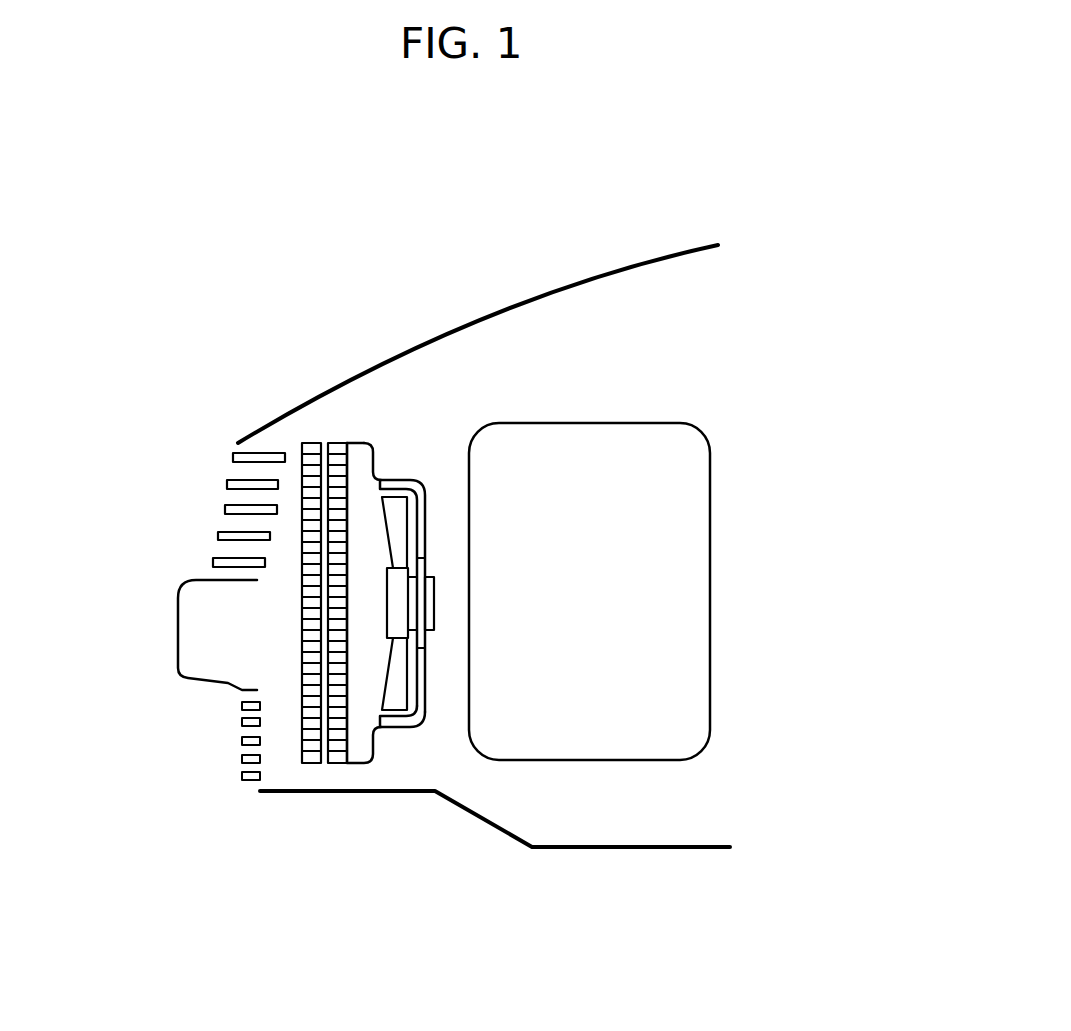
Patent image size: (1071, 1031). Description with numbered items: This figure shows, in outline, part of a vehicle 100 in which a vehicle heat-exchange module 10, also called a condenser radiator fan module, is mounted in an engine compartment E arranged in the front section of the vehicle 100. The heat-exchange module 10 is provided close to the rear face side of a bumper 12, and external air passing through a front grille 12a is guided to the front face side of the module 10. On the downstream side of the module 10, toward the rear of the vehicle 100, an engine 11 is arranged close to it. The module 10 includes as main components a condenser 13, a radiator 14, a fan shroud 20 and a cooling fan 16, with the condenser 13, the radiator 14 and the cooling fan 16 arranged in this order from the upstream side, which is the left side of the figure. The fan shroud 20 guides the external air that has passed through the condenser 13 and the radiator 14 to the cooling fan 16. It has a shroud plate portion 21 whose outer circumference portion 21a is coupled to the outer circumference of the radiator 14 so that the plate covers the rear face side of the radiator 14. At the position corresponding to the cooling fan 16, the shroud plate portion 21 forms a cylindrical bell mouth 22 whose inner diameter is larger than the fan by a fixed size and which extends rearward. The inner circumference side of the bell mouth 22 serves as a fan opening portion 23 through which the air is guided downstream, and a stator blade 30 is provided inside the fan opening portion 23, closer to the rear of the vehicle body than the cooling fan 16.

The vehicle 100 is at (652, 258).
The engine compartment E is at (556, 333).
The vehicle heat-exchange module 10 is at (353, 418).
The engine 11 is at (700, 425).
The bumper 12 is at (190, 643).
The front grille 12a is at (225, 509).
The condenser 13 is at (306, 765).
The radiator 14 is at (337, 758).
The cooling fan 16 is at (397, 502).
The fan shroud 20 is at (375, 748).
The shroud plate portion 21 is at (372, 758).
The outer circumference portion 21a is at (350, 441).
The bell mouth 22 is at (417, 735).
The fan opening portion 23 is at (400, 712).
The stator blade 30 is at (428, 527).